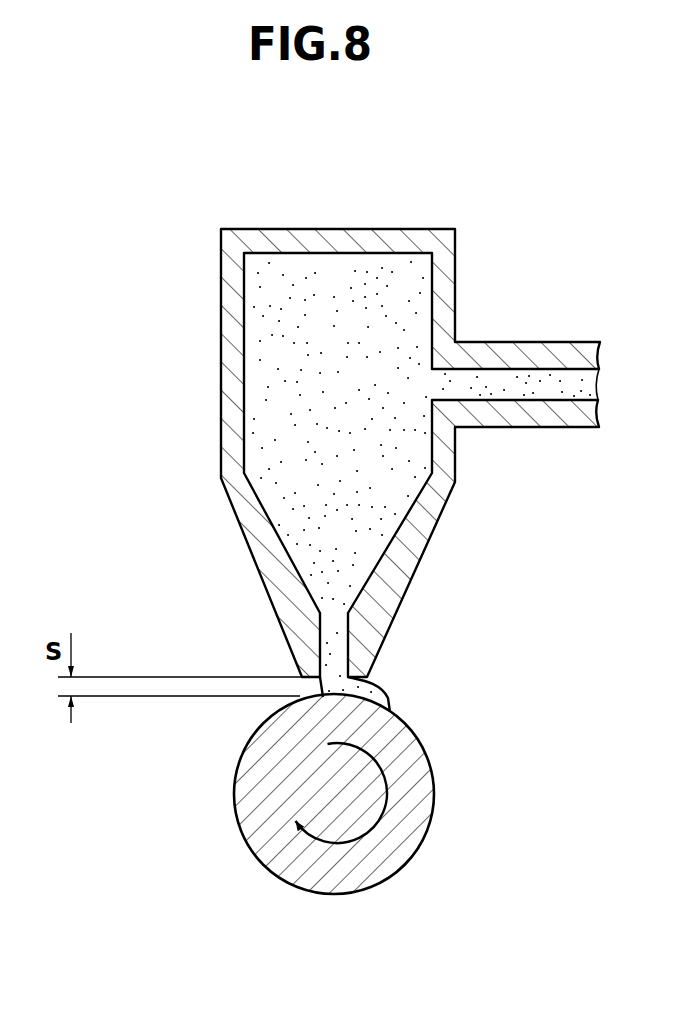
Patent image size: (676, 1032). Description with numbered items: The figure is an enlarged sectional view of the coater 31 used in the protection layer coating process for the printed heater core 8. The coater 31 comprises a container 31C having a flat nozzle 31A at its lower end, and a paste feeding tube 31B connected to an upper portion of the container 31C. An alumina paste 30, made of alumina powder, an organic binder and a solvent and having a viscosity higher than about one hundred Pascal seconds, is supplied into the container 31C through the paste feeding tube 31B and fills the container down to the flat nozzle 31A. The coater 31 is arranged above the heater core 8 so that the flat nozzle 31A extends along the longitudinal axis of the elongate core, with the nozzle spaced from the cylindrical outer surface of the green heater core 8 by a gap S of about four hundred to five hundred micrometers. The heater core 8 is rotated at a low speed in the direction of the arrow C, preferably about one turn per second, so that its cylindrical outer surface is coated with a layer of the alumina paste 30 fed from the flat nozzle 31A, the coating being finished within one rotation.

The coater 31 is at (364, 390).
The container 31C is at (232, 248).
The paste feeding tube 31B is at (529, 353).
The flat nozzle 31A is at (365, 645).
The alumina paste 30 is at (287, 505).
The printed heater core 8 is at (415, 770).